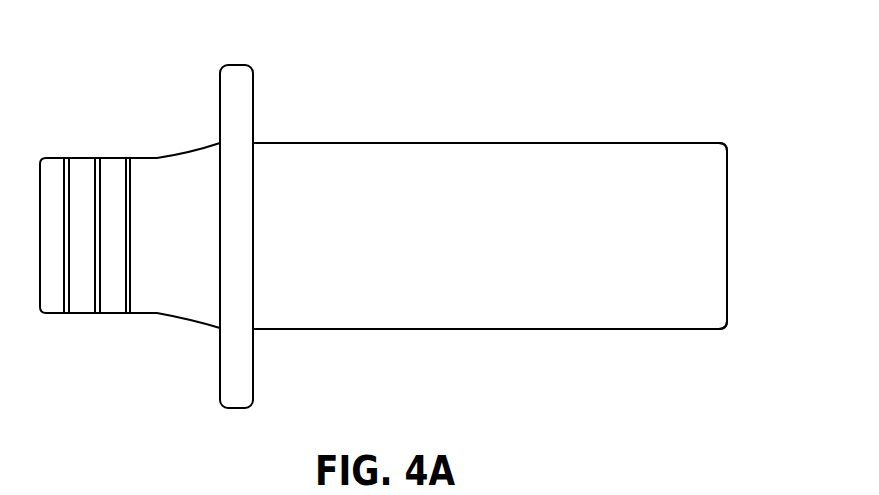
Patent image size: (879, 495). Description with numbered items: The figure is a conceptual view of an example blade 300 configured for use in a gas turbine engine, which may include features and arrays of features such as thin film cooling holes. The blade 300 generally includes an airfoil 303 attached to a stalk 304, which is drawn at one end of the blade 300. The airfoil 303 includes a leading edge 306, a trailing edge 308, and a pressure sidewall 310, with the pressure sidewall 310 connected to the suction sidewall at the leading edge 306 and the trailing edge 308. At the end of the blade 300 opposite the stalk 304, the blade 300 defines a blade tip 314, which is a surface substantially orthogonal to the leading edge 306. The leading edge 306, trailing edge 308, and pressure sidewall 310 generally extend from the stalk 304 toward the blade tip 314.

The blade 300 is at (101, 36).
The airfoil 303 is at (442, 323).
The stalk 304 is at (145, 313).
The leading edge 306 is at (348, 329).
The trailing edge 308 is at (407, 142).
The pressure sidewall 310 is at (495, 252).
The blade tip 314 is at (740, 158).